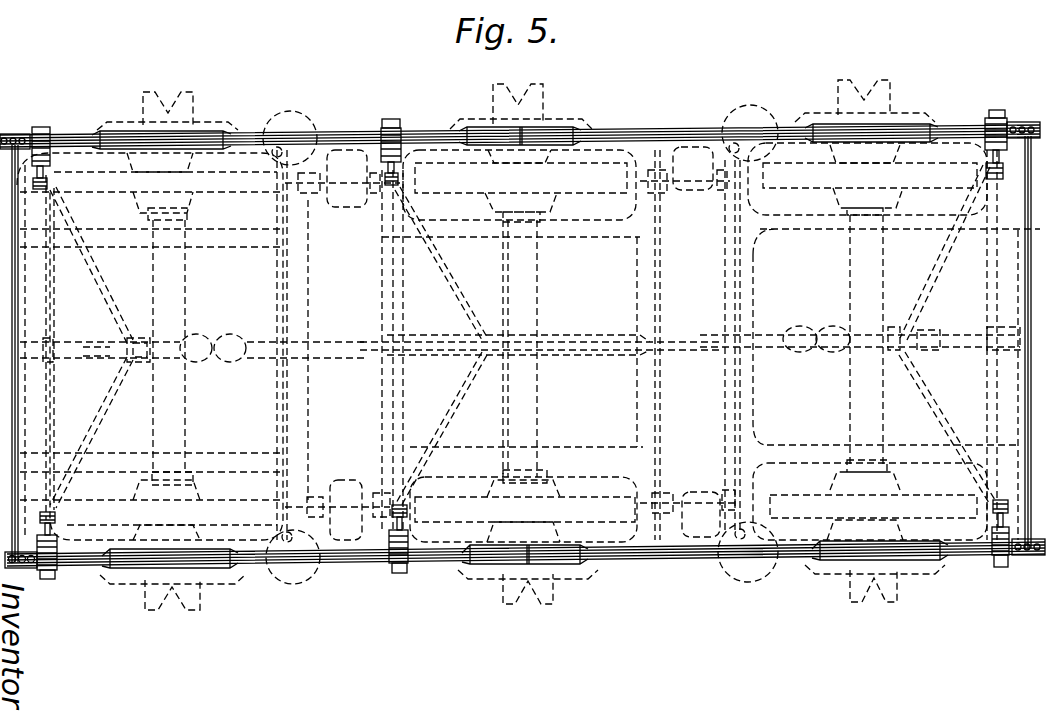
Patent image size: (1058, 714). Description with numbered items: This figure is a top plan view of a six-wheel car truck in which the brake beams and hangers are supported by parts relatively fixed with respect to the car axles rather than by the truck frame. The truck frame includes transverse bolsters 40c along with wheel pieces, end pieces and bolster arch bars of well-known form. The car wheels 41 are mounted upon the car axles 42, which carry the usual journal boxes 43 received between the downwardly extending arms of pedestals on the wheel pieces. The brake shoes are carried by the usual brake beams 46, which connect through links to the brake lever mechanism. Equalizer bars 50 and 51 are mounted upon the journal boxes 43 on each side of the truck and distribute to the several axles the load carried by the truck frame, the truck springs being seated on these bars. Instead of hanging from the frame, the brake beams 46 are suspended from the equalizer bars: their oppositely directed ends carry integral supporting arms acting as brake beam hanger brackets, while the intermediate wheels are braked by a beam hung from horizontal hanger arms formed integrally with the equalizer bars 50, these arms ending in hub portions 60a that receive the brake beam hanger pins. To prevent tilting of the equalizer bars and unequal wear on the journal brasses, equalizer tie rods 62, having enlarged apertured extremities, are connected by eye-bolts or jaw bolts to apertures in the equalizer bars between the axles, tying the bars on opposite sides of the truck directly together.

The car wheels 41 is at (240, 165).
The car axles 42 is at (175, 436).
The journal boxes 43 is at (840, 98).
The brake beams 46 is at (100, 404).
The transverse bolsters 40c is at (318, 294).
The equalizer bars 50 is at (333, 562).
The equalizer bars 51 is at (808, 553).
The hub portions 60a is at (397, 560).
The equalizer tie rods 62 is at (1020, 560).